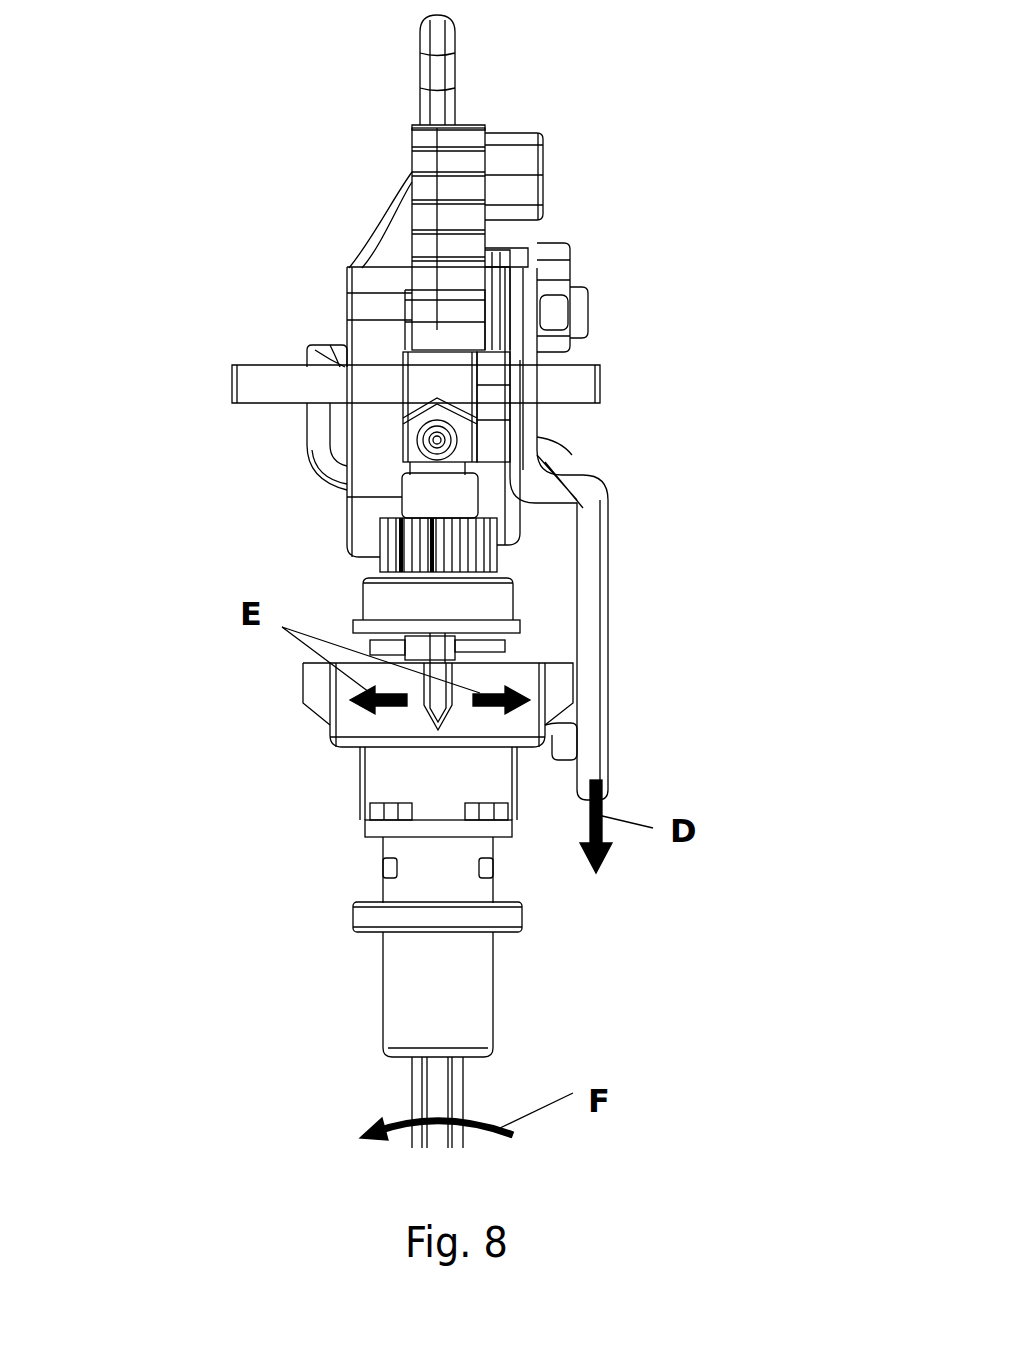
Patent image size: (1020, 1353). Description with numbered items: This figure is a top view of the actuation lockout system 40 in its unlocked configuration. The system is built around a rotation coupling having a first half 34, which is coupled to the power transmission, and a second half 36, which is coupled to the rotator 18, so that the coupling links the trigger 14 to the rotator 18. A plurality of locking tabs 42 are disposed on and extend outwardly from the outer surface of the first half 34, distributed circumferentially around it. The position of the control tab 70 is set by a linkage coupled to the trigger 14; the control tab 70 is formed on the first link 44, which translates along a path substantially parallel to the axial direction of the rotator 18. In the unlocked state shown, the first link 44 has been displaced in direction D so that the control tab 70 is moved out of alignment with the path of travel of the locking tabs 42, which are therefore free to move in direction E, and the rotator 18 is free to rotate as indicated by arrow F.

The trigger 14 is at (322, 428).
The rotator 18 is at (443, 1102).
The first half of the rotation coupling 34 is at (387, 777).
The second half of the rotation coupling 36 is at (405, 993).
The actuation lockout system 40 is at (683, 411).
The locking tabs 42 is at (555, 673).
The first link 44 is at (593, 587).
The control tab 70 is at (563, 742).